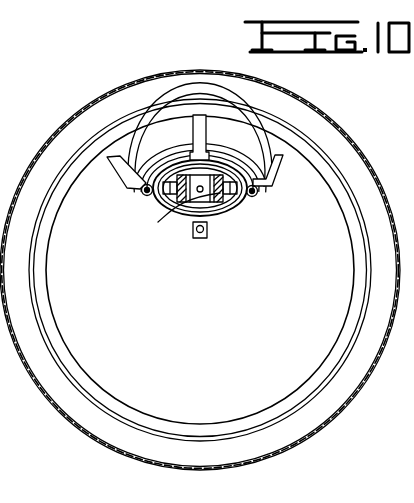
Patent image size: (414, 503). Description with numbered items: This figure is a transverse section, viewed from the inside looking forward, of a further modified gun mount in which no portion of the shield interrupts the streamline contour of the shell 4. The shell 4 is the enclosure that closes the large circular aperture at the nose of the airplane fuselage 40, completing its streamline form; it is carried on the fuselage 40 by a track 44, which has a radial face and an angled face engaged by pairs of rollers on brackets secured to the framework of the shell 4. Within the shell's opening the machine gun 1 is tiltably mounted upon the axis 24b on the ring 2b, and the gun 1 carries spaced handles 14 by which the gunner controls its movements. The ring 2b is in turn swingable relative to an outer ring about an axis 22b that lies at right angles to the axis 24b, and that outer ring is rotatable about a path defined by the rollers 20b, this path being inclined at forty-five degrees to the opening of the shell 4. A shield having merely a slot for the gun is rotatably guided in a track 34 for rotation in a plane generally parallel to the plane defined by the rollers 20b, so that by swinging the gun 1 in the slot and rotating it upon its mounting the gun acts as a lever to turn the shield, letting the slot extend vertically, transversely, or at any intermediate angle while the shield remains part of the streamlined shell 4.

The machine gun 1 is at (182, 251).
The ring 2b is at (178, 216).
The shell 4 is at (200, 270).
The handles 14 is at (180, 193).
The rollers 20b is at (141, 189).
The axis 22b is at (166, 192).
The axis 24b is at (240, 190).
The track 34 is at (160, 136).
The fuselage 40 is at (129, 462).
The track 44 is at (134, 421).